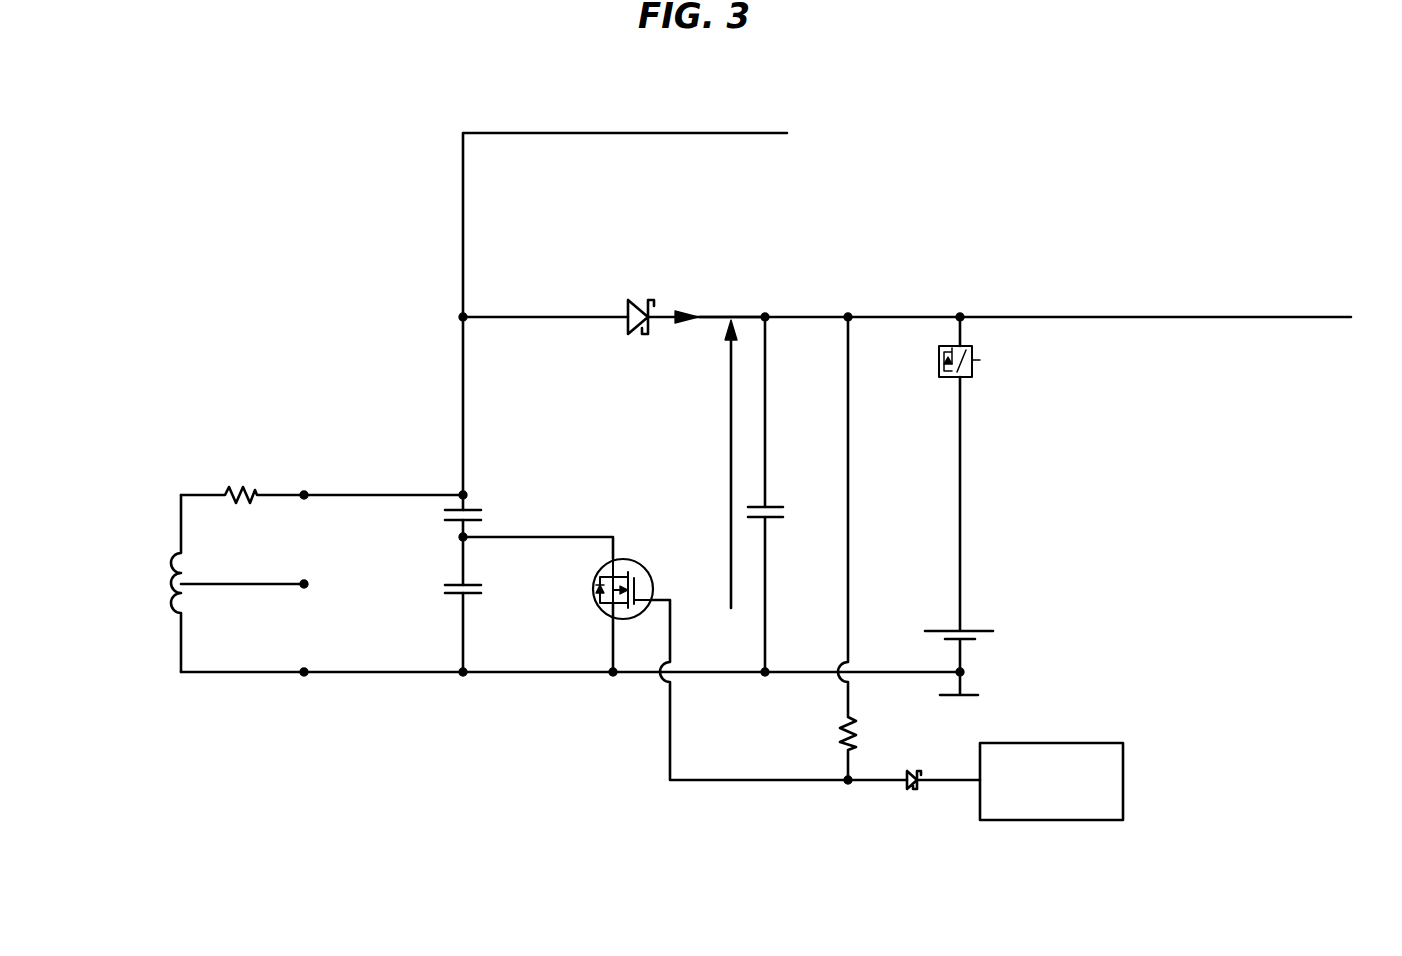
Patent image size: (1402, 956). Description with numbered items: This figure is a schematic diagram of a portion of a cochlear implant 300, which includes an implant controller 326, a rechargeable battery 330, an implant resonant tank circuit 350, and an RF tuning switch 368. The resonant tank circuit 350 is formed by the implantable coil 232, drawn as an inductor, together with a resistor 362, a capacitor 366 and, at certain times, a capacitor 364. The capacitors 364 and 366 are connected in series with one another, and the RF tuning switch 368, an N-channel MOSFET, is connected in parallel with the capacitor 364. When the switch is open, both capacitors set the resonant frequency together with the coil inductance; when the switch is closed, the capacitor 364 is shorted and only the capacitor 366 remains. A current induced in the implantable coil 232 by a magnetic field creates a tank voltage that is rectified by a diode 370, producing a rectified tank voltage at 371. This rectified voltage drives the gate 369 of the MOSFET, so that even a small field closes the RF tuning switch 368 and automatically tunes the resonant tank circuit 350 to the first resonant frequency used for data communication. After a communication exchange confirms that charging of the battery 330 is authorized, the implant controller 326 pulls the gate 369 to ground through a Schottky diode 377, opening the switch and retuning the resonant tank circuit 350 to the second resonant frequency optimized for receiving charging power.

The cochlear implant 300 is at (462, 868).
The implant resonant tank circuit 350 is at (390, 370).
The implant coil L2 232 is at (178, 611).
The resistor 362 is at (230, 494).
The capacitor 366 is at (477, 508).
The capacitor 364 is at (473, 598).
The RF tuning switch 368 is at (632, 525).
The gate 369 is at (656, 566).
The diode 370 is at (628, 332).
The rectified tank voltage node 371 is at (718, 316).
The rechargeable battery 330 is at (1025, 624).
The Schottky diode 377 is at (906, 790).
The implant controller 326 is at (1125, 780).